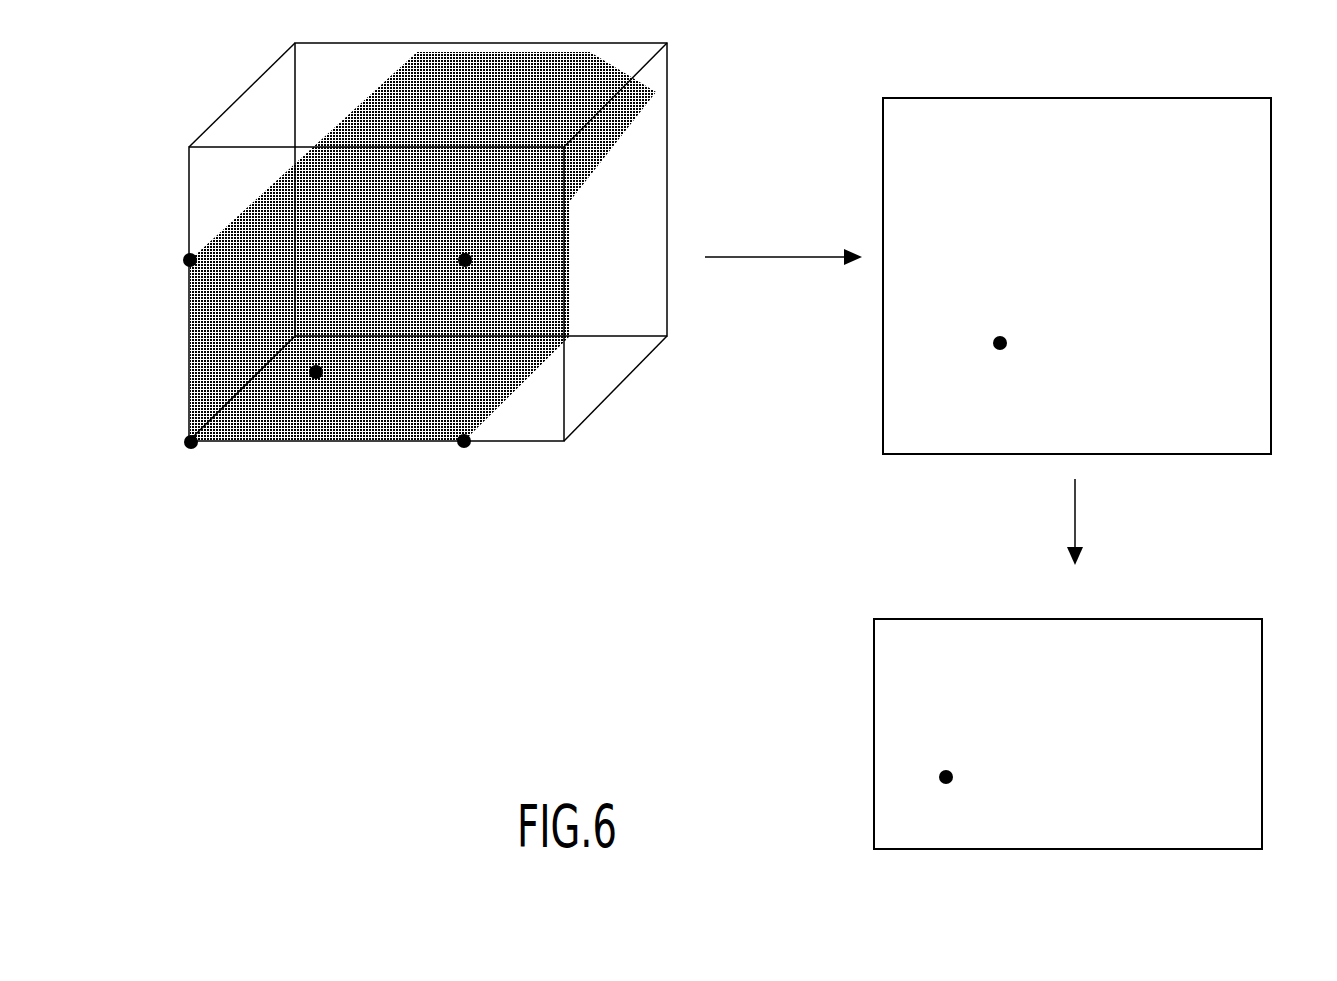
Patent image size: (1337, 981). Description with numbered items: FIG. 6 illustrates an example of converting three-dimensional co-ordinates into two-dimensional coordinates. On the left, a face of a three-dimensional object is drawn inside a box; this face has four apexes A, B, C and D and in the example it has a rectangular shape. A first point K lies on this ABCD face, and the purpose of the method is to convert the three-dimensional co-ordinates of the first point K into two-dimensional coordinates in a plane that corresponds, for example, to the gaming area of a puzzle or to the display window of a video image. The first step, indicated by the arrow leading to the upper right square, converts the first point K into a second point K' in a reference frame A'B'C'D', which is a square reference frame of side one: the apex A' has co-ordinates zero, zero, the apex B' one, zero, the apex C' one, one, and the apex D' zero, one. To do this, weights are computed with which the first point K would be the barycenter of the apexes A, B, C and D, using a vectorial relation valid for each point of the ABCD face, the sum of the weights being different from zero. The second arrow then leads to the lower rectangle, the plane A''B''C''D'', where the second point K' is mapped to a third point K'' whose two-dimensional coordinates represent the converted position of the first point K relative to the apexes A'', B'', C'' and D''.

The apex A is at (191, 460).
The apex B is at (463, 459).
The apex C is at (477, 253).
The apex D is at (174, 263).
The first point K is at (325, 361).
The apex A' is at (871, 450).
The apex B' is at (1279, 453).
The apex C' is at (1280, 99).
The apex D' is at (872, 99).
The second point K' is at (1013, 332).
The apex A'' is at (858, 848).
The apex B'' is at (1274, 846).
The apex C'' is at (1274, 620).
The apex D'' is at (858, 625).
The third point K'' is at (963, 764).